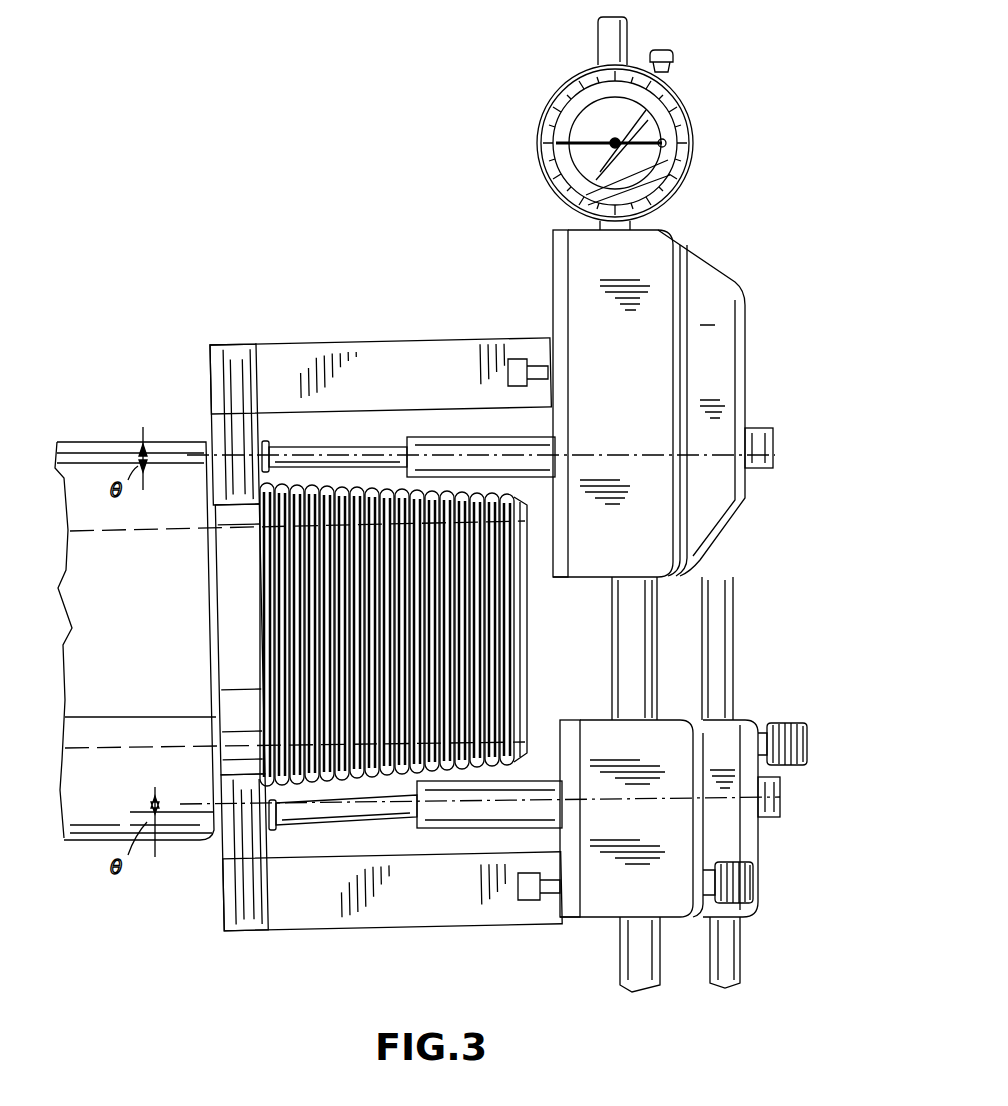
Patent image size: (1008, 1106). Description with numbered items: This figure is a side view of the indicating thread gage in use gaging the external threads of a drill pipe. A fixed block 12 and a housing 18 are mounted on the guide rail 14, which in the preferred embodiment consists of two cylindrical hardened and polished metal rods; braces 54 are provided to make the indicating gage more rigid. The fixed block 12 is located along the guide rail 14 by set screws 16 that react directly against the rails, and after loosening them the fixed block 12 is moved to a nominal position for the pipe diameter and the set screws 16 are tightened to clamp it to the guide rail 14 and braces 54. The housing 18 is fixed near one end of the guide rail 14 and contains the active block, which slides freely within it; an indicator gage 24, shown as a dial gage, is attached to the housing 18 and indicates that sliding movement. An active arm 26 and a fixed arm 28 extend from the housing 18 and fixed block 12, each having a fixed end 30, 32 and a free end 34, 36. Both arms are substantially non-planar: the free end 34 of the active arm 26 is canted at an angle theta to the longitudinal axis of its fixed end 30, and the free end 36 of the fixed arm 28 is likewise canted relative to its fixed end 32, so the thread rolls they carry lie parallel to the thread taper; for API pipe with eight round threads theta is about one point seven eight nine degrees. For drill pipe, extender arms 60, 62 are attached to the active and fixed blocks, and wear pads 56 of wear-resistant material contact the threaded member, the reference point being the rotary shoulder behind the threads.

The fixed block 12 is at (602, 902).
The guide rail 14 is at (636, 640).
The set screws 16 is at (808, 758).
The housing 18 is at (713, 285).
The indicator gage 24 is at (557, 118).
The active arm 26 is at (470, 447).
The fixed arm 28 is at (477, 828).
The fixed end of active arm 30 is at (772, 430).
The fixed end of fixed arm 32 is at (775, 822).
The free end of active arm 34 is at (417, 437).
The free end of fixed arm 36 is at (437, 835).
The braces 54 is at (727, 667).
The wear pads 56 is at (210, 345).
The extender arm 60 is at (320, 345).
The extender arm 62 is at (382, 905).